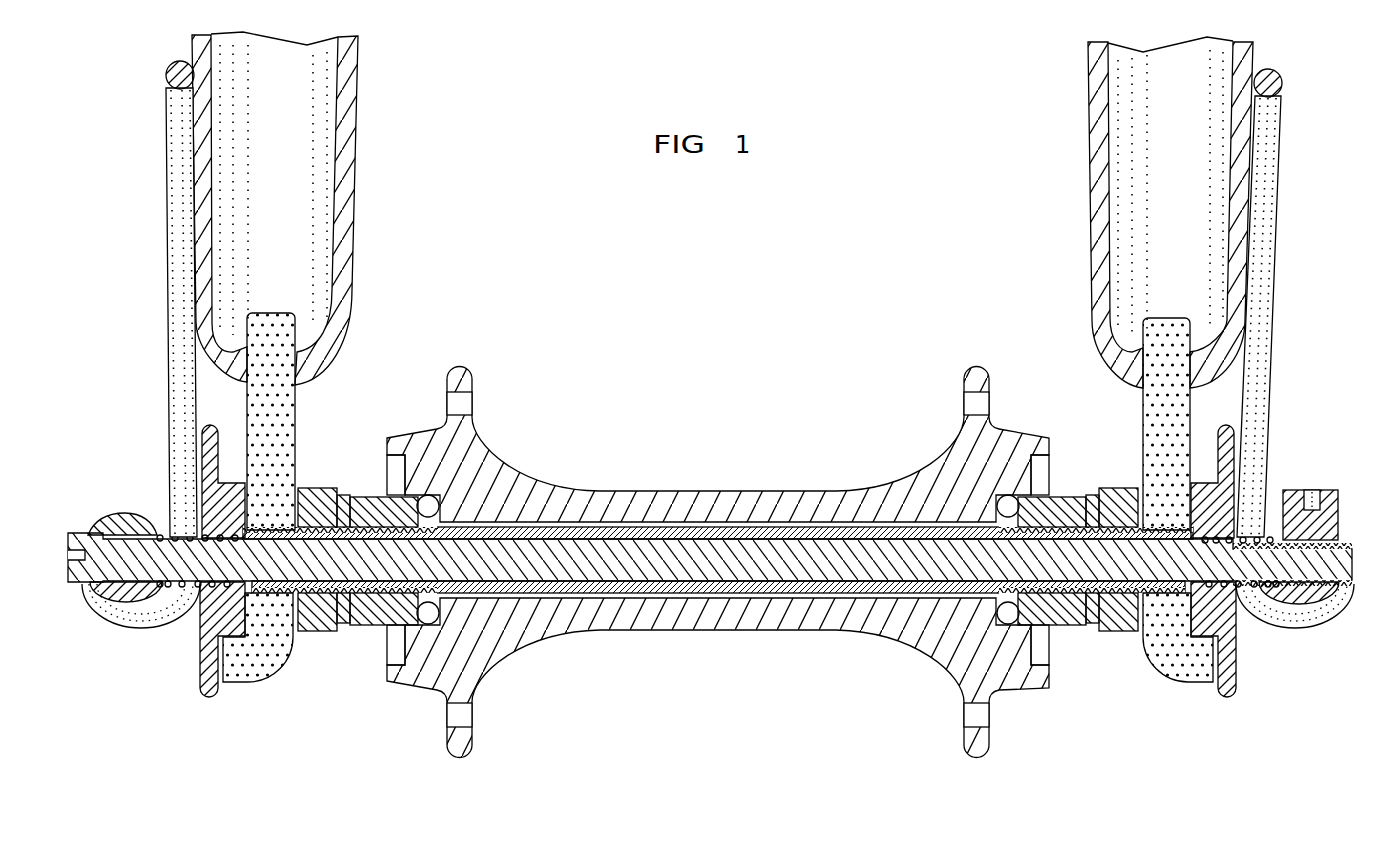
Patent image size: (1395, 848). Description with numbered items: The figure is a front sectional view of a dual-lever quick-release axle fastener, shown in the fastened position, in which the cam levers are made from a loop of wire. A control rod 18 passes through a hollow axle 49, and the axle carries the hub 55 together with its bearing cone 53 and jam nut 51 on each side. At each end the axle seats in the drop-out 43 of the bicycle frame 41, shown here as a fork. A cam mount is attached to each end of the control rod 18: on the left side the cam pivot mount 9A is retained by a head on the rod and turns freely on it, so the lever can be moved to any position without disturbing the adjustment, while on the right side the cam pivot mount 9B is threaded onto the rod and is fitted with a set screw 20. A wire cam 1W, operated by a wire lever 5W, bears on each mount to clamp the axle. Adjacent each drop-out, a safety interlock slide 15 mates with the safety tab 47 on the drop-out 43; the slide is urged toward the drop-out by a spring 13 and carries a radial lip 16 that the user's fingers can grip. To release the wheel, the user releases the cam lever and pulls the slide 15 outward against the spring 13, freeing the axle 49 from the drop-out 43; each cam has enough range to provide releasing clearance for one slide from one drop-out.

The wire cam 1W is at (112, 628).
The wire lever 5W is at (170, 204).
The cam pivot mount for wire cam on head of control rod 9A is at (115, 520).
The cam pivot mount for wire cam on threaded end of control rod 9B is at (1340, 513).
The spring 13 is at (160, 533).
The safety interlock slide or washer 15 is at (198, 620).
The radial finger grip or lip on slide 16 is at (195, 688).
The control rod or skewer 18 is at (675, 557).
The set screw 20 is at (1312, 492).
The bicycle frame (fork or seat stay) 41 is at (303, 92).
The drop-out 43 is at (290, 432).
The safety tab or other coupling surface on drop-out 47 is at (232, 672).
The axle 49 is at (787, 532).
The jam nut 51 is at (313, 630).
The bearing cone 53 is at (367, 617).
The hub 55 is at (912, 472).